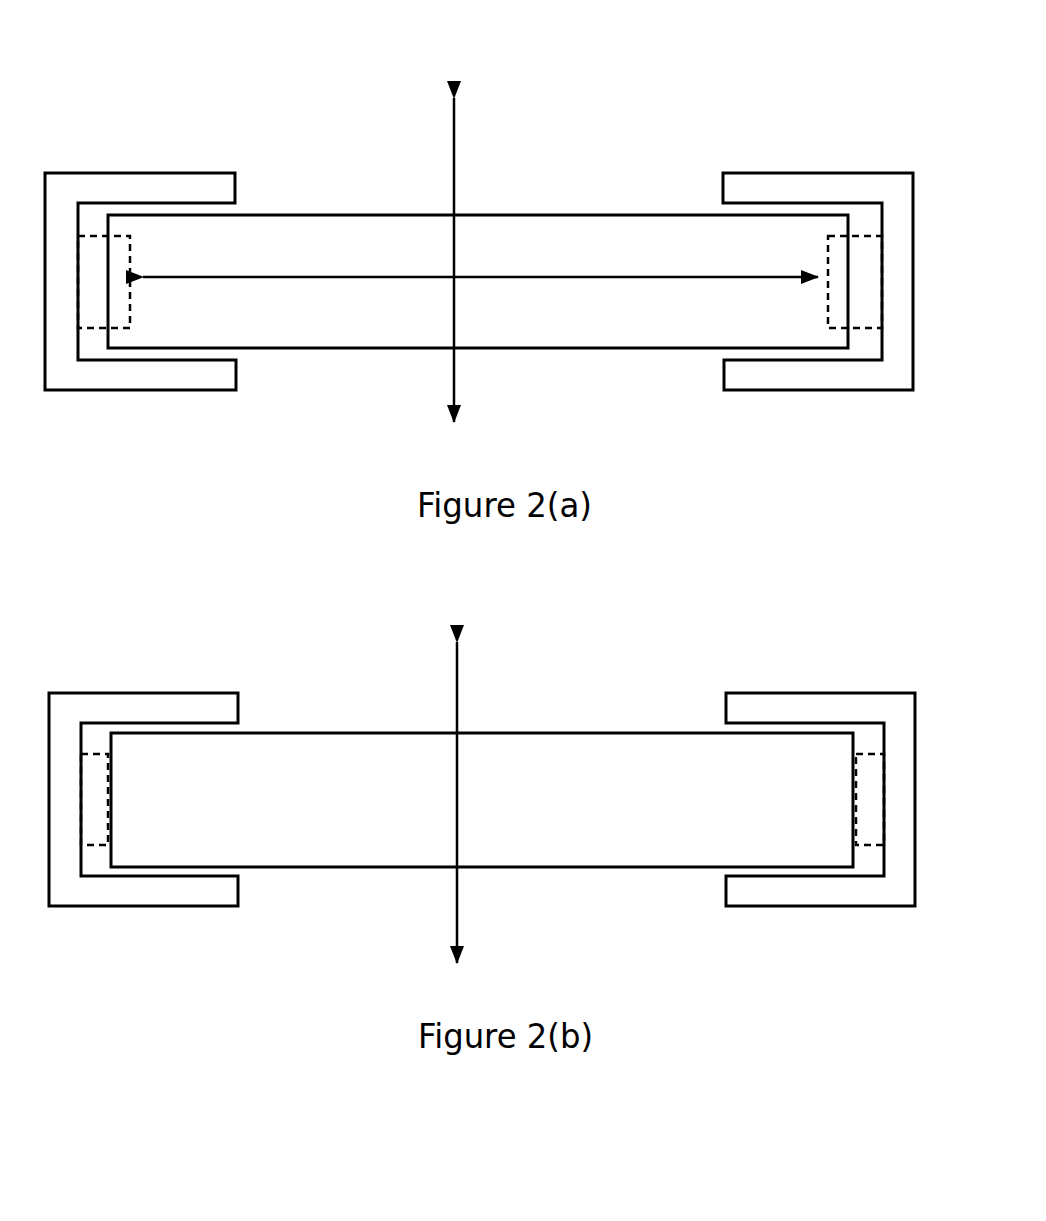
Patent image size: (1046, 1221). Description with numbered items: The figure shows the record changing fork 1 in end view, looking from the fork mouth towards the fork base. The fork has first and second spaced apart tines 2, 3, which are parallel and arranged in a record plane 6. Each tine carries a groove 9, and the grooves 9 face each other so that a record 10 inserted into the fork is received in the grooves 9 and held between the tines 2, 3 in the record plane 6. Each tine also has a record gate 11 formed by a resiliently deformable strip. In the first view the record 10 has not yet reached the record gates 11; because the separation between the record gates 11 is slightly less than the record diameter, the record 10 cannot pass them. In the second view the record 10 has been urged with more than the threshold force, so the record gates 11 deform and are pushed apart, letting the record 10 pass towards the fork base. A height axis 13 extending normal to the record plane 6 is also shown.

In FIG. 2A, the record changing fork 1 is at (165, 112).
In FIG. 2A, the first tine 2 is at (215, 380).
In FIG. 2B, the first tine 2 is at (155, 897).
In FIG. 2A, the second tine 3 is at (867, 380).
In FIG. 2B, the second tine 3 is at (776, 902).
In FIG. 2A, the record plane 6 is at (365, 288).
In FIG. 2A, the groove 9 is at (98, 213).
In FIG. 2A, the record 10 is at (612, 232).
In FIG. 2B, the record 10 is at (584, 755).
In FIG. 2A, the record gate 11 is at (858, 288).
In FIG. 2B, the record gate 11 is at (868, 789).
In FIG. 2A, the height axis 13 is at (447, 158).
In FIG. 2B, the height axis 13 is at (462, 703).